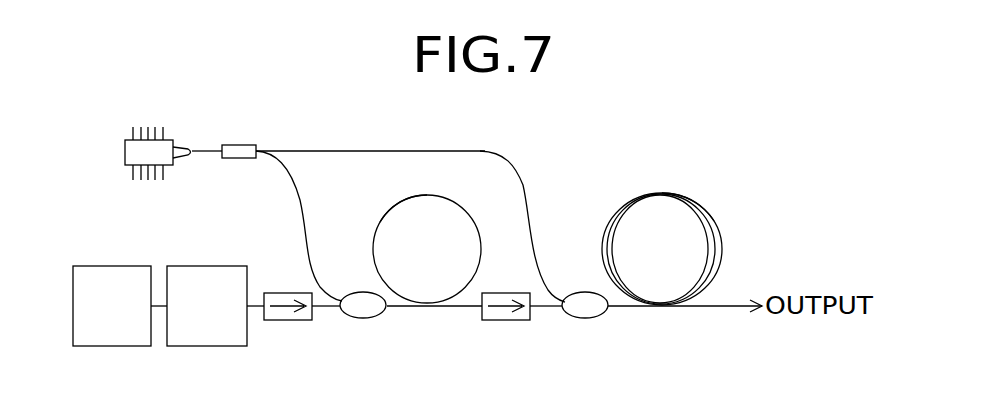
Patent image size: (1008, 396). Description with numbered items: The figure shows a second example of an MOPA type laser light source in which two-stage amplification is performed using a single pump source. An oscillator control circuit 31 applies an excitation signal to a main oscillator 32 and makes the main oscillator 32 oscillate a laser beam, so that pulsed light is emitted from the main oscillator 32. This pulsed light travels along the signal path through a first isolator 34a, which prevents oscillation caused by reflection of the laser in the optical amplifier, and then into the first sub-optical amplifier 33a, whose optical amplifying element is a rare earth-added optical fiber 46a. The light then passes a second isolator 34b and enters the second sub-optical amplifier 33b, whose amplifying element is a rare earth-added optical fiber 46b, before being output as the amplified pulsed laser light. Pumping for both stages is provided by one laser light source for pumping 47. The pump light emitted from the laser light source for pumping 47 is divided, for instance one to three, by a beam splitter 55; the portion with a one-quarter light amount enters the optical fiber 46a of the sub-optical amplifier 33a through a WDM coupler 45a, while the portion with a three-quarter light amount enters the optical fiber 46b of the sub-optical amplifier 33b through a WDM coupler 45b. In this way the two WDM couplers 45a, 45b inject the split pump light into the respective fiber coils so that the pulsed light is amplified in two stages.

The laser light source for pumping 47 is at (125, 158).
The beam splitter 55 is at (247, 158).
The oscillator control circuit 31 is at (108, 266).
The main oscillator 32 is at (210, 266).
The isolator 34a is at (287, 320).
The isolator 34b is at (497, 320).
The WDM coupler 45a is at (360, 318).
The WDM coupler 45b is at (590, 318).
The sub-optical amplifier 33a is at (446, 183).
The sub-optical amplifier 33b is at (712, 191).
The rare earth-added optical fiber 46a is at (382, 222).
The rare earth-added optical fiber 46b is at (716, 223).